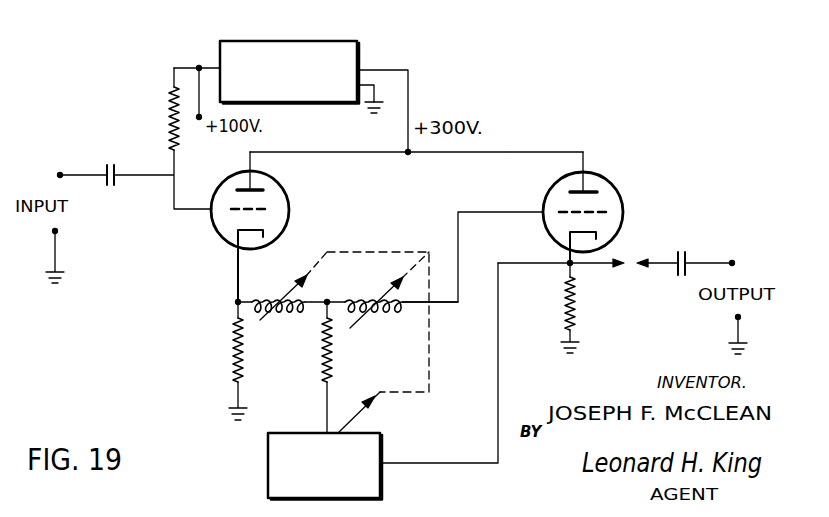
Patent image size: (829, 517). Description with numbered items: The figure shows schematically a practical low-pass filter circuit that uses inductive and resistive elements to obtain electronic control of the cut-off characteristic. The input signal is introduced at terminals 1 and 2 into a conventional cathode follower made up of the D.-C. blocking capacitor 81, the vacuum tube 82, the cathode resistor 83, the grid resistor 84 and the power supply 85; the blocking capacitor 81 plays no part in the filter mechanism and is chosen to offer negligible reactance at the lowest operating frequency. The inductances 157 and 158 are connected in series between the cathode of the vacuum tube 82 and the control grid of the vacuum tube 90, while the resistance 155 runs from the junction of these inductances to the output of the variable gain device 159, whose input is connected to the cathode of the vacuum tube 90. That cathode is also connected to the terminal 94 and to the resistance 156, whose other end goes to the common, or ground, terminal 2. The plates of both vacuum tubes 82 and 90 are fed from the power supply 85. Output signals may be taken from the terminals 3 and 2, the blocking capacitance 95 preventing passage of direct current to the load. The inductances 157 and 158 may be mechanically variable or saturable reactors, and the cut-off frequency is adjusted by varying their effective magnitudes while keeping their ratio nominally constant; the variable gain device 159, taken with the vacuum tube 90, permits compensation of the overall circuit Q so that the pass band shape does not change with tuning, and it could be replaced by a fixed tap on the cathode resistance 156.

The input terminal 1 is at (60, 175).
The common or ground terminal 2 is at (55, 231).
The output terminal 3 is at (732, 263).
The D.-C. blocking capacitor 81 is at (114, 179).
The vacuum tube 82 is at (289, 210).
The cathode resistor 83 is at (233, 352).
The grid resistor 84 is at (169, 135).
The power supply 85 is at (318, 103).
The vacuum tube 90 is at (637, 203).
The terminal 94 is at (623, 266).
The blocking capacitance 95 is at (676, 257).
The resistance 155 is at (322, 354).
The resistance 156 is at (565, 296).
The inductance 157 is at (278, 296).
The inductance 158 is at (372, 296).
The variable gain device 159 is at (382, 448).